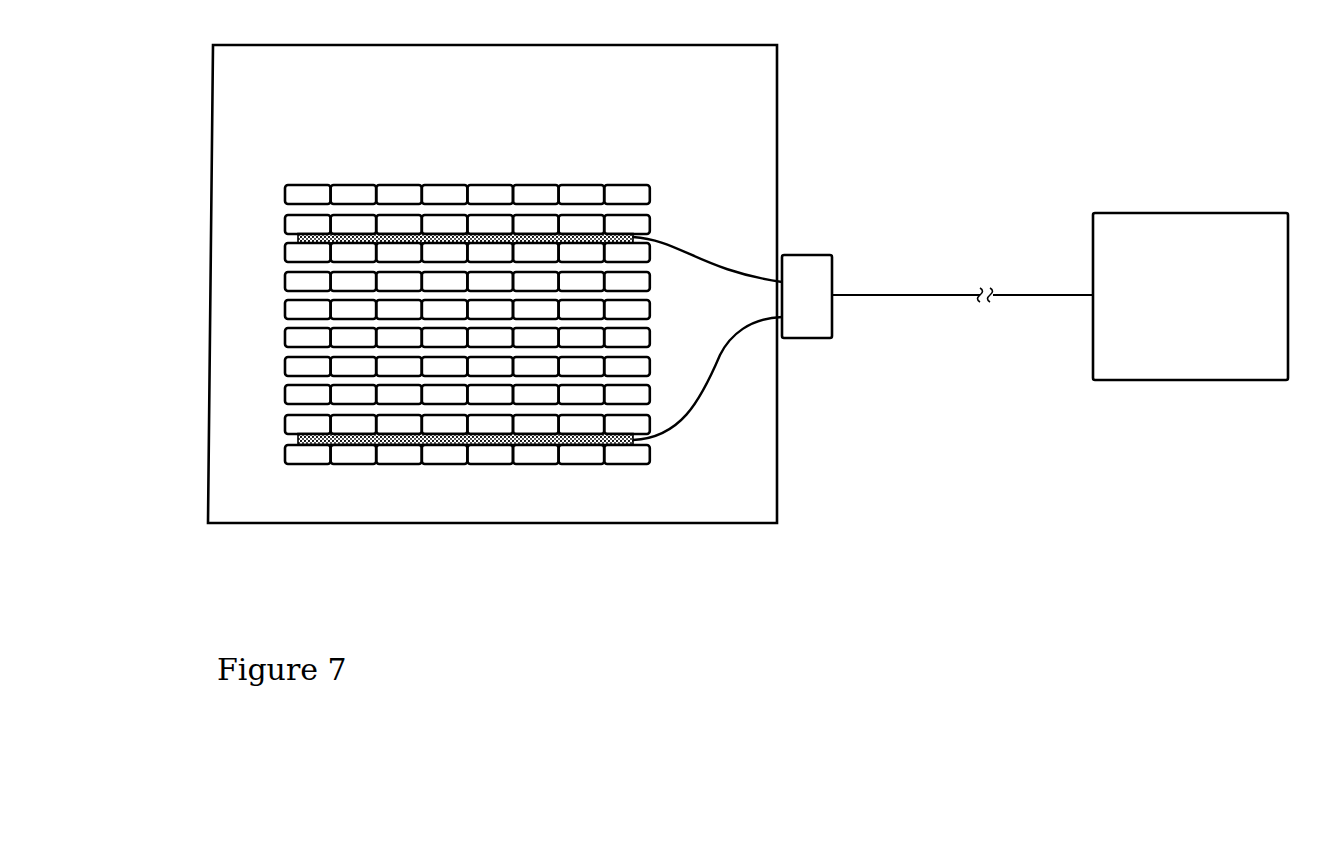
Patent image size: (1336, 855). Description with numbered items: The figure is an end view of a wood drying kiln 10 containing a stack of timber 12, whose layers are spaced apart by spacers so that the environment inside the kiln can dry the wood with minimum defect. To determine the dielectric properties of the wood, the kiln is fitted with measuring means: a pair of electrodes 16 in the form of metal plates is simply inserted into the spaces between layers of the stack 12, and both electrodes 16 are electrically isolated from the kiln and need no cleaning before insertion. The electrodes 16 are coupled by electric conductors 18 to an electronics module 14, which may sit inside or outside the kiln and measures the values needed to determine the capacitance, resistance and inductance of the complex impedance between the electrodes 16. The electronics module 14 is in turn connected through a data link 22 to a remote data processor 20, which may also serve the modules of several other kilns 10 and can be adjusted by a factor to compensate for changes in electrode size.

The wood drying kiln 10 is at (777, 190).
The stack of timber 12 is at (662, 182).
The electronics module 14 is at (808, 338).
The electrodes 16 is at (298, 238).
The electric conductors 18 is at (717, 267).
The remote data processor 20 is at (1190, 222).
The data link 22 is at (1038, 295).